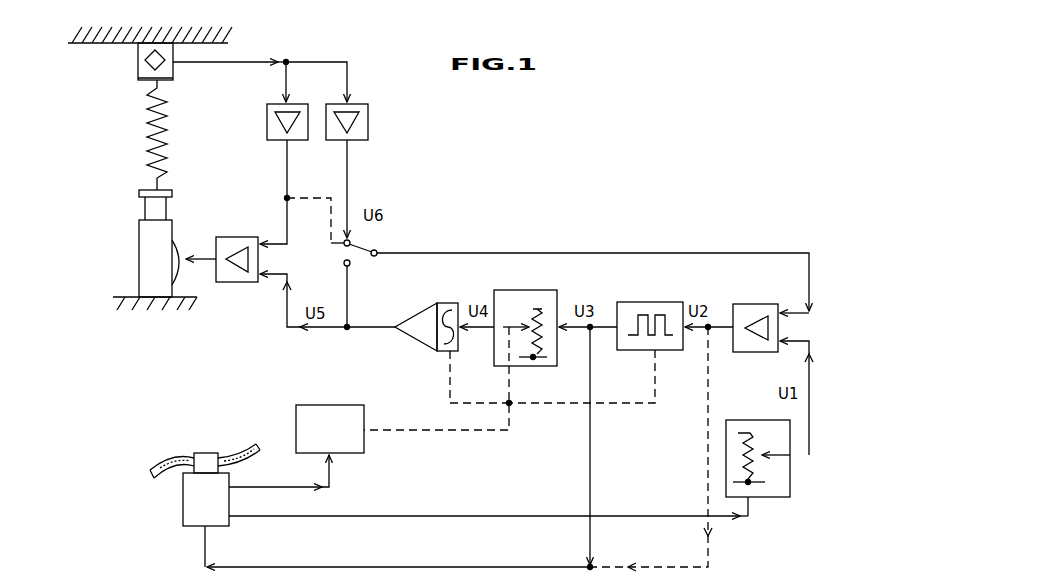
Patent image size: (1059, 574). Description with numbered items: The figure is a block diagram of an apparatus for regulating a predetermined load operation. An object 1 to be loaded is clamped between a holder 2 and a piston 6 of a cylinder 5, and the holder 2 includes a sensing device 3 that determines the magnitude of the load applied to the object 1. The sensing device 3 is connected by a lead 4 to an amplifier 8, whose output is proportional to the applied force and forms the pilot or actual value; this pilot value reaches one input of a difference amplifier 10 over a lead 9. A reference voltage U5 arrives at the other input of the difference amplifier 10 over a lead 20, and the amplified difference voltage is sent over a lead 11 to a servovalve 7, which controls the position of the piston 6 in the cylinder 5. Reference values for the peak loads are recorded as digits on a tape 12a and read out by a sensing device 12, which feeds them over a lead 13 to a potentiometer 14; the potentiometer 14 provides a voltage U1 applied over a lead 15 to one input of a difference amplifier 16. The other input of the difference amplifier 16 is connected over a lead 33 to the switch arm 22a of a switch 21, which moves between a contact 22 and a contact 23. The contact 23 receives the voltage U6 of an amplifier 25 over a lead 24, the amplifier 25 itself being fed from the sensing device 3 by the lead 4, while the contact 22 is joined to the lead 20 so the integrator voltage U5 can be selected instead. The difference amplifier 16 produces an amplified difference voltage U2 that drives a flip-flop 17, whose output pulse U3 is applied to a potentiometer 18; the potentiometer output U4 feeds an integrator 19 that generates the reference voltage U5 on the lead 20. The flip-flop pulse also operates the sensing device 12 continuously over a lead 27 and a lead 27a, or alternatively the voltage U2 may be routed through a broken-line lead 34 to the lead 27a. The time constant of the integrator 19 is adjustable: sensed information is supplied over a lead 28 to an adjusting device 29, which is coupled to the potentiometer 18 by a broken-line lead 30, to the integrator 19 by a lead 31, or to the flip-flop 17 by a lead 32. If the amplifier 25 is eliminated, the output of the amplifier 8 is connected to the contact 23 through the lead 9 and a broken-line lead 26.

The object 1 is at (150, 158).
The clamp or holder 2 is at (140, 81).
The sensing device 3 is at (138, 61).
The lead 4 is at (210, 65).
The cylinder 5 is at (139, 265).
The piston 6 is at (139, 205).
The servovalve 7 is at (178, 248).
The amplifier 8 is at (268, 142).
The lead 9 is at (287, 183).
The difference amplifier 10 is at (234, 283).
The lead 11 is at (205, 262).
The sensing device 12 is at (190, 495).
The tape 12a is at (152, 468).
The lead 13 is at (240, 520).
The potentiometer 14 is at (756, 499).
The lead 15 is at (810, 374).
The difference amplifier 16 is at (740, 304).
The flip-flop 17 is at (655, 277).
The potentiometer 18 is at (548, 290).
The integrator 19 is at (422, 343).
The lead 20 is at (298, 332).
The switch 21 is at (323, 259).
The contact 22 is at (344, 265).
The switch arm 22a is at (375, 257).
The contact 23 is at (351, 243).
The lead 24 is at (348, 186).
The amplifier 25 is at (352, 142).
The lead 26 is at (331, 190).
The lead 27 is at (590, 378).
The lead 27a is at (438, 565).
The lead 28 is at (246, 486).
The adjusting device 29 is at (364, 442).
The link or lead 30 is at (511, 401).
The link or lead 31 is at (481, 403).
The line or lead 32 is at (622, 403).
The lead 33 is at (447, 253).
The lead 34 is at (710, 560).